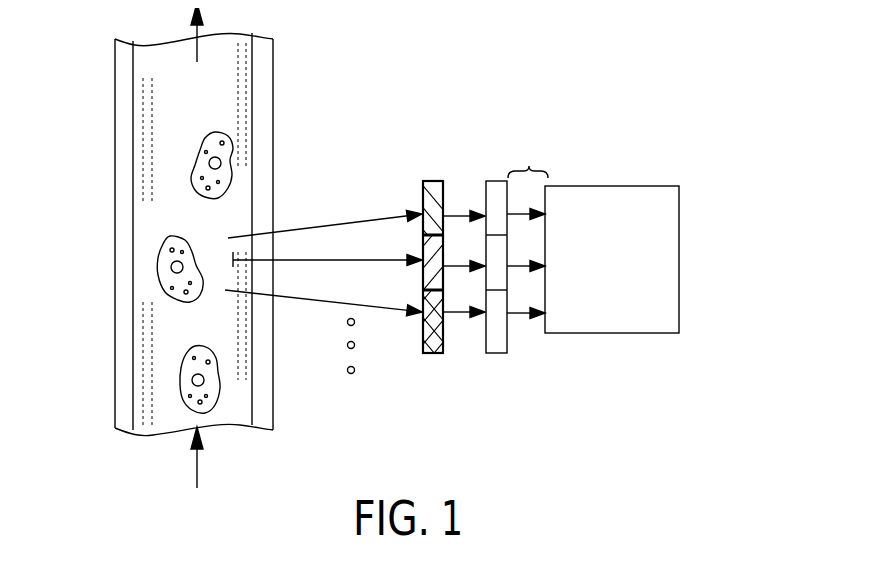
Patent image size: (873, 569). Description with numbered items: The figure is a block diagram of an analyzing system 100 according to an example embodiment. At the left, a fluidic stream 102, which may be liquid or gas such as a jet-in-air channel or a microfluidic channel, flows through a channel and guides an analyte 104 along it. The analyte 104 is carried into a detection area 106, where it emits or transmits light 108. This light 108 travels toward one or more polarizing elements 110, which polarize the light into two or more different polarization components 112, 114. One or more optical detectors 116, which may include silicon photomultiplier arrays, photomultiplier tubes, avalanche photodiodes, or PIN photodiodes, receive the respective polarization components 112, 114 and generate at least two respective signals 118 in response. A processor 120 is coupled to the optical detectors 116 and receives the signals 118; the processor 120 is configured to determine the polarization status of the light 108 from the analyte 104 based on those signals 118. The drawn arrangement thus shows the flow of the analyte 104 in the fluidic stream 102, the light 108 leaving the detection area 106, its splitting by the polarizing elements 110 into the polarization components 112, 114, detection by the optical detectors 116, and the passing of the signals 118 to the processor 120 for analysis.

The analyzing system 100 is at (708, 108).
The fluidic stream 102 is at (197, 468).
The analyte 104 is at (159, 267).
The detection area 106 is at (127, 39).
The light 108 is at (355, 220).
The polarizing elements 110 is at (430, 180).
The polarization component 112 is at (458, 213).
The polarization component 114 is at (448, 268).
The optical detectors 116 is at (497, 180).
The signals 118 is at (527, 226).
The processor 120 is at (613, 186).